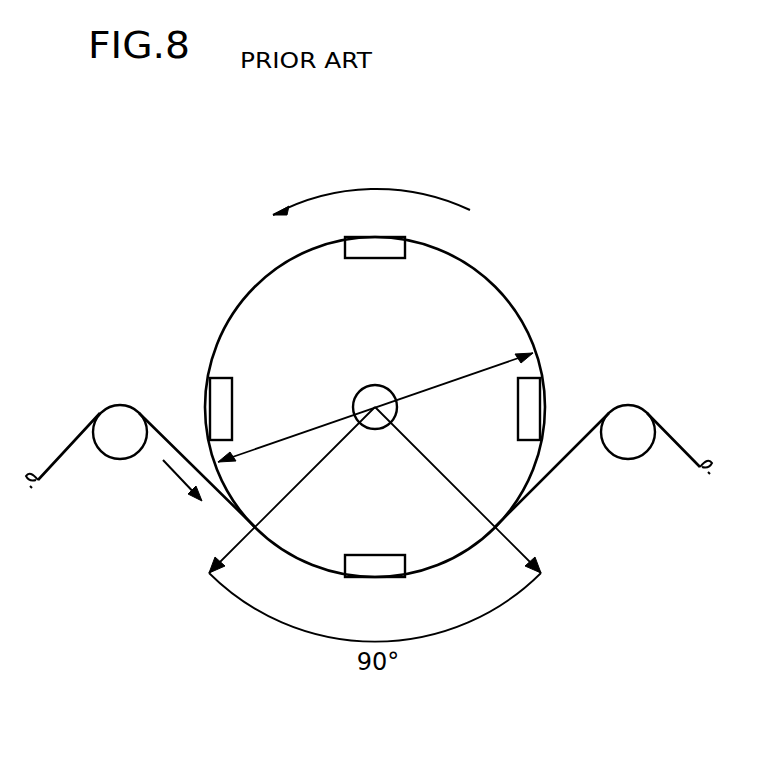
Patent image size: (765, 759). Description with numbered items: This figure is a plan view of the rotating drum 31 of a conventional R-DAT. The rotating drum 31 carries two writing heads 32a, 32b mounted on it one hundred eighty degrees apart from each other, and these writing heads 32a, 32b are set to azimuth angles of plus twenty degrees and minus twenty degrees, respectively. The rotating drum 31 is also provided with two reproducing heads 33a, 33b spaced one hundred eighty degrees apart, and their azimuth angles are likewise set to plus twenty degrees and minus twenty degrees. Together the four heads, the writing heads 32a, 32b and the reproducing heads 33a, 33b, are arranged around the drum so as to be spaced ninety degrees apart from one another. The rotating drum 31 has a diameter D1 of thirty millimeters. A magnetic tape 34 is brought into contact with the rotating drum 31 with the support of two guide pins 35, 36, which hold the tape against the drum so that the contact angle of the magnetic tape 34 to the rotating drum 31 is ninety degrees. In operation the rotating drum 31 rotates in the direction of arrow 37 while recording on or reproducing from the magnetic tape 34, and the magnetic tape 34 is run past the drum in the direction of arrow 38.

The rotating drum 31 is at (492, 300).
The writing head 32a is at (383, 247).
The writing head 32b is at (373, 568).
The reproducing head 33a is at (534, 412).
The reproducing head 33b is at (218, 410).
The magnetic tape 34 is at (553, 470).
The guide pin 35 is at (118, 418).
The guide pin 36 is at (626, 418).
The arrow 37 is at (383, 189).
The arrow 38 is at (178, 486).
The diameter D1 is at (418, 372).